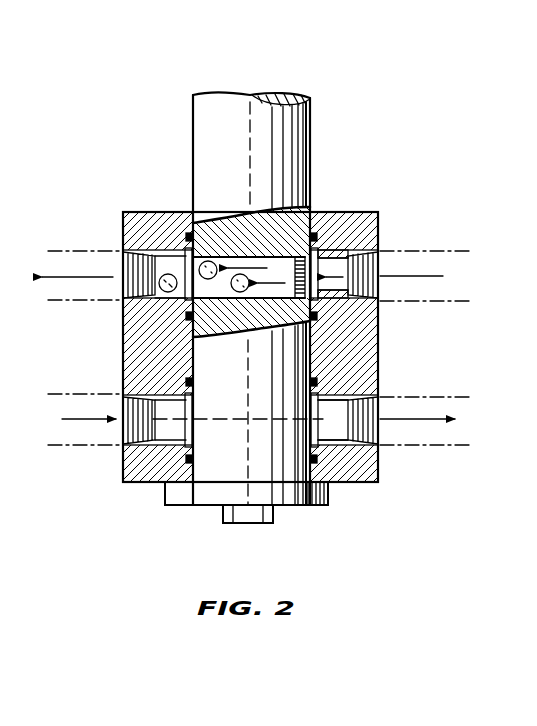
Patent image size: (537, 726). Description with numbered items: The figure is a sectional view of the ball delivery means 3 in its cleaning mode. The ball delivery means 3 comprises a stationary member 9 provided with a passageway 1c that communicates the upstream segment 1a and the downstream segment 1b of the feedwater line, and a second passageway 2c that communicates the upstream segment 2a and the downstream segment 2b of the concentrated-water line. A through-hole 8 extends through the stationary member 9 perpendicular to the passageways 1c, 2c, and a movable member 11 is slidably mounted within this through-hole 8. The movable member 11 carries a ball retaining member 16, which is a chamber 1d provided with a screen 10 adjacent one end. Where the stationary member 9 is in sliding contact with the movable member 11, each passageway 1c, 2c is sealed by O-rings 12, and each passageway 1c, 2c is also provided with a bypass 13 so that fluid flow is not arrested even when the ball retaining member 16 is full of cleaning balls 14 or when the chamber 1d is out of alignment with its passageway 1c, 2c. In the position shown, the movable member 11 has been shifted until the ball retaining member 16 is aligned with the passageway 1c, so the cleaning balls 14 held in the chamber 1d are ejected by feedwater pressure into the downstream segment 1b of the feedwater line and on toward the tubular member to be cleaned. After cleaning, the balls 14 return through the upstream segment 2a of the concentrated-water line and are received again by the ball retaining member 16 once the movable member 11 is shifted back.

The ball delivery means 3 is at (268, 126).
The through-hole 8 is at (306, 492).
The stationary member 9 is at (360, 470).
The screen 10 is at (290, 248).
The movable member 11 is at (195, 505).
The O-rings 12 is at (314, 236).
The bypass 13 is at (320, 254).
The cleaning balls 14 is at (168, 292).
The ball retaining member 16 is at (262, 258).
The upstream segment of feedwater line 1a is at (450, 251).
The downstream segment of feedwater line 1b is at (78, 250).
The passageway 1c is at (318, 292).
The chamber 1d is at (232, 298).
The upstream segment of concentrated-water line 2a is at (86, 396).
The downstream segment of concentrated-water line 2b is at (440, 396).
The passageway 2c is at (320, 400).